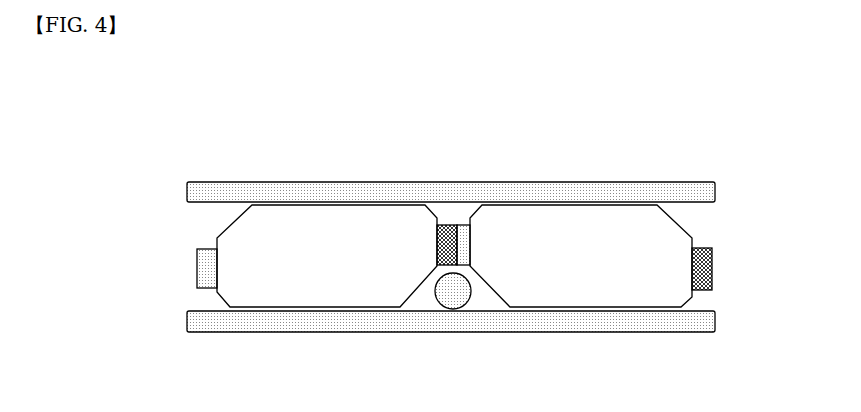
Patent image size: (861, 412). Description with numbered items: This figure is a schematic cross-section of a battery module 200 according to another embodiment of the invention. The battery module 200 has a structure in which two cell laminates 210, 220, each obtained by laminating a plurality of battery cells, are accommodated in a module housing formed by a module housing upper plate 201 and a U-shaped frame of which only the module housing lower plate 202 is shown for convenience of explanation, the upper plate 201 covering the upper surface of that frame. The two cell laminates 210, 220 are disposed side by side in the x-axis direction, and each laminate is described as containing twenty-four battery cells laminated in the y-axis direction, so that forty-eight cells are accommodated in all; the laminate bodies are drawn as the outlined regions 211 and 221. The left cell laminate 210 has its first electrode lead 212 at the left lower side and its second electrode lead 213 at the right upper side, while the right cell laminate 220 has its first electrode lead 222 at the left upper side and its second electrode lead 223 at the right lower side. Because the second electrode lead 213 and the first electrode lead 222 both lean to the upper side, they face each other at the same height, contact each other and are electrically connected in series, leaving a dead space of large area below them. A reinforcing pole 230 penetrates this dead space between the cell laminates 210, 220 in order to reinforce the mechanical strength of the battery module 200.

The battery module 200 is at (134, 103).
The module housing upper plate 201 is at (715, 192).
The module housing lower plate 202 is at (715, 322).
The cell laminate 210 is at (205, 228).
The first cell body 211 is at (320, 282).
The first electrode lead 212 is at (197, 262).
The second electrode lead 213 is at (449, 225).
The cell laminate 220 is at (703, 222).
The second cell body 221 is at (595, 287).
The first electrode lead 222 is at (463, 225).
The second electrode lead 223 is at (712, 268).
The reinforcing pole 230 is at (468, 305).